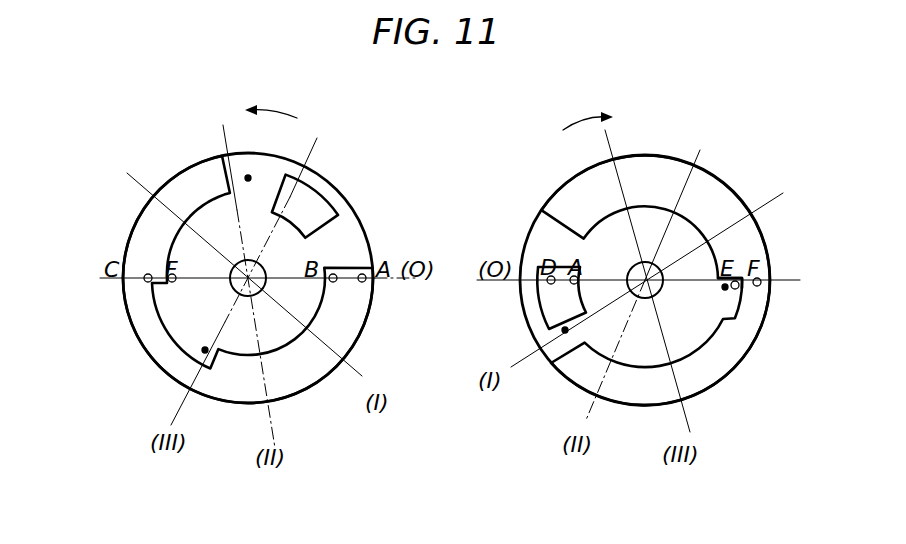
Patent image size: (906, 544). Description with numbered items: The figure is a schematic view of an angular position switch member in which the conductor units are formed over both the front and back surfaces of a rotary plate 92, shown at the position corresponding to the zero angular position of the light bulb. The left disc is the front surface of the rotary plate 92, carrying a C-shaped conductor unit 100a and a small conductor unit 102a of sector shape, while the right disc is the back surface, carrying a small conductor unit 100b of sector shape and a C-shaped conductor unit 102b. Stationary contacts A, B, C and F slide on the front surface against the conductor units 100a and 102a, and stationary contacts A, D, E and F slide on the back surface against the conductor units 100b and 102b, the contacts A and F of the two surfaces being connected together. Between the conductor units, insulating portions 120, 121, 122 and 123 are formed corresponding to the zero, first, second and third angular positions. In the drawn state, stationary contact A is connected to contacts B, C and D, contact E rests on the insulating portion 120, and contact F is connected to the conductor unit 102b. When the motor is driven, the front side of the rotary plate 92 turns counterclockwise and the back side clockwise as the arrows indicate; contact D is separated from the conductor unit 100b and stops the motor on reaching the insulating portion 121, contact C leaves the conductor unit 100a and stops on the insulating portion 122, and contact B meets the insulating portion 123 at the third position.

The rotary plate 92 is at (122, 231).
The C-shaped conductor unit 100a is at (163, 351).
The small conductor unit of sector shape 100b is at (553, 303).
The small conductor unit of sector shape 102a is at (318, 207).
The C-shaped conductor unit 102b is at (715, 205).
The insulating portion 120 is at (738, 297).
The insulating portion 121 is at (565, 331).
The insulating portion 122 is at (249, 177).
The insulating portion 123 is at (205, 352).